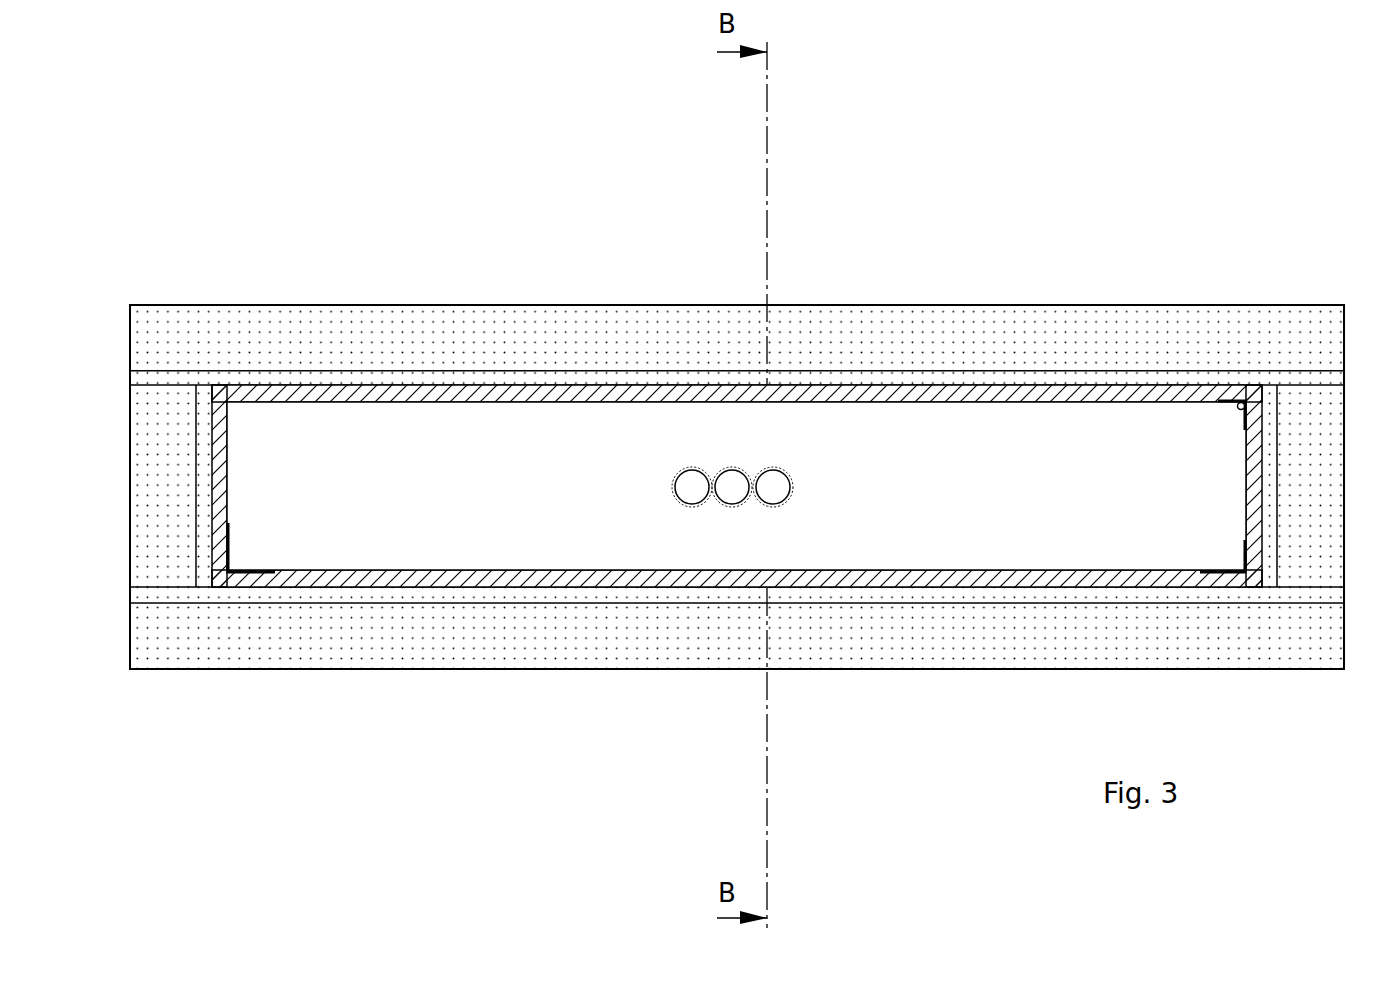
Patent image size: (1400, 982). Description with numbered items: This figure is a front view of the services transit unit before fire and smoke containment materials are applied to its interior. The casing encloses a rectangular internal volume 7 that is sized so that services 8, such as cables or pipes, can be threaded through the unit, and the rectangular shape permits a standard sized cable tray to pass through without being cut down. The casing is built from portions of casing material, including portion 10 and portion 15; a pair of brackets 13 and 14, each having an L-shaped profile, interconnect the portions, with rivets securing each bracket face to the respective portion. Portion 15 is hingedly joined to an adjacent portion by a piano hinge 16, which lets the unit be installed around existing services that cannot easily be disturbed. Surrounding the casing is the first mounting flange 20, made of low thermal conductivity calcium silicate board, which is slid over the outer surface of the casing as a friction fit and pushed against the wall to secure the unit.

The internal volume 7 is at (736, 417).
The services 8 is at (672, 488).
The portion of the casing material 10 is at (141, 486).
The bracket 13 is at (211, 626).
The bracket 14 is at (1275, 634).
The portion of the casing material 15 is at (737, 427).
The piano hinge 16 is at (1302, 333).
The first mounting flange 20 is at (737, 453).